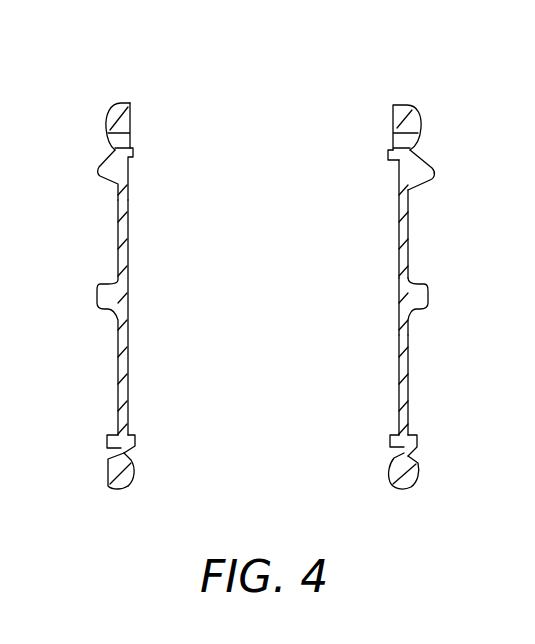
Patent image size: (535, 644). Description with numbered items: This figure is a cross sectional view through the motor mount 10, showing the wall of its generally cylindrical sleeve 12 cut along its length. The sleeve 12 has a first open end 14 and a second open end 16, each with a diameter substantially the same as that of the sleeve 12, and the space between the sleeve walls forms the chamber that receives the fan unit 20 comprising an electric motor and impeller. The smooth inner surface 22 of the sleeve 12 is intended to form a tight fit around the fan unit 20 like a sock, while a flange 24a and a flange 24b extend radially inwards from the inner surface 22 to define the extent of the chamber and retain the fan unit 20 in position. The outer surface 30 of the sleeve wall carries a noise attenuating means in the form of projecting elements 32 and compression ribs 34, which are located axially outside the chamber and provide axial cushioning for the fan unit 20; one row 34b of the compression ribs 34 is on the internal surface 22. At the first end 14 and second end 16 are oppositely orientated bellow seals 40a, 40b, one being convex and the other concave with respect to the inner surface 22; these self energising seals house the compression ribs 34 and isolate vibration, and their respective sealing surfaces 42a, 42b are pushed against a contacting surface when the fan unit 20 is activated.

The motor mount 10 is at (158, 64).
The sleeve 12 is at (409, 228).
The first open end 14 is at (263, 480).
The second open end 16 is at (261, 118).
The fan unit 20 is at (360, 213).
The inner surface 22 is at (400, 357).
The flange 24a is at (393, 440).
The flange 24b is at (134, 152).
The outer surface 30 is at (409, 328).
The projecting elements 32 is at (435, 173).
The compression ribs 34 is at (418, 467).
The row of compression ribs 34b is at (131, 122).
The bellow seal 40a is at (127, 483).
The bellow seal 40b is at (412, 112).
The sealing surface 42a is at (105, 483).
The sealing surface 42b is at (128, 103).